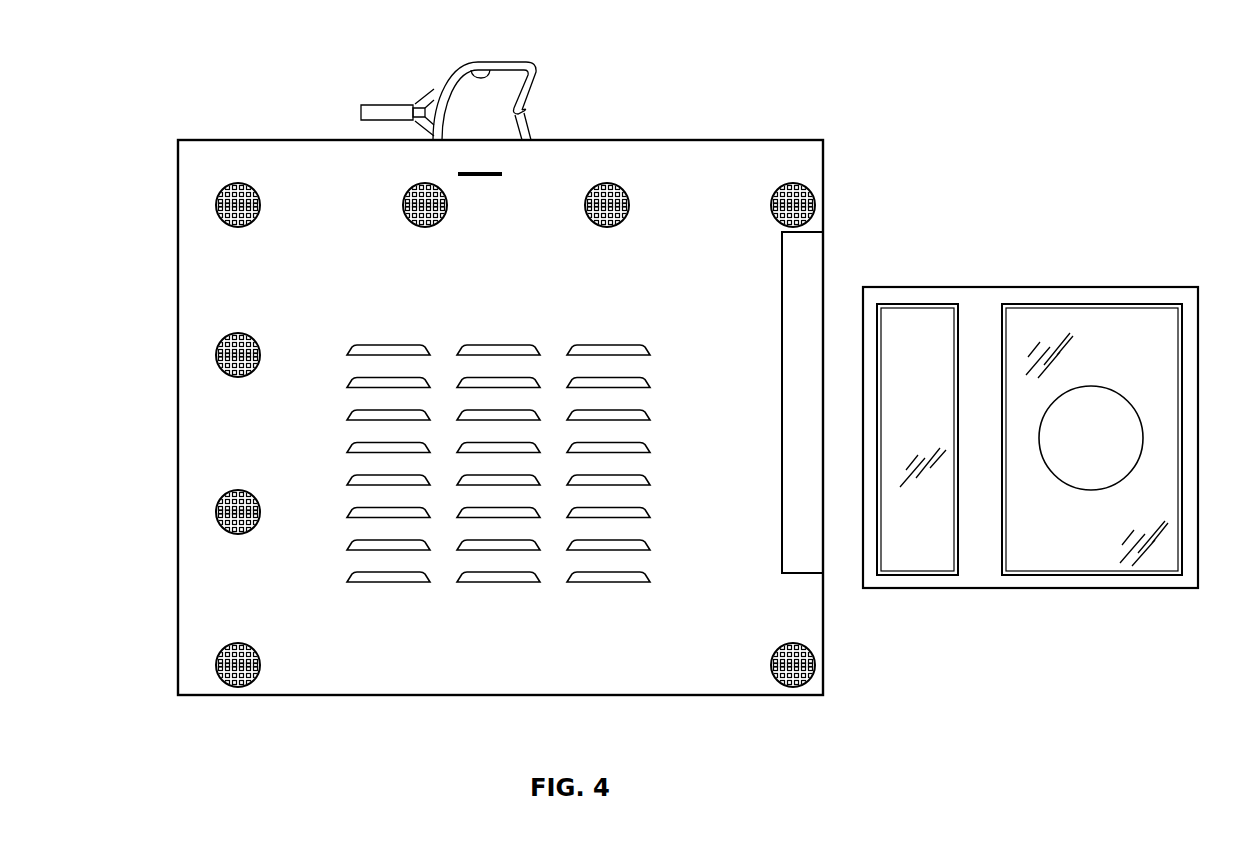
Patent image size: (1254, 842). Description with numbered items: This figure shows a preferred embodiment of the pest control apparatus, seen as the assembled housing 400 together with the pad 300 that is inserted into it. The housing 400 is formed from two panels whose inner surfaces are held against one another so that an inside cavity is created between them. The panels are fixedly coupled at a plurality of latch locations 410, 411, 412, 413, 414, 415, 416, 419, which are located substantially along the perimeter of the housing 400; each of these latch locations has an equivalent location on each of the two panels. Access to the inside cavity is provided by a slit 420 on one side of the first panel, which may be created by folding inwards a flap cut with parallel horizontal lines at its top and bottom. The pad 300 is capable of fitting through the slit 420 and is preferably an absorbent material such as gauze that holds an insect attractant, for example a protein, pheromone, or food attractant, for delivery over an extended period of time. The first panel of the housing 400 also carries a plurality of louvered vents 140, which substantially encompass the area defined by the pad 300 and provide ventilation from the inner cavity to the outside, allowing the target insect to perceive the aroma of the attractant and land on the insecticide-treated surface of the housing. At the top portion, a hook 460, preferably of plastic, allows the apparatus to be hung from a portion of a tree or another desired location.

The housing 400 is at (207, 58).
The hook 460 is at (508, 57).
The latch location 410 is at (215, 665).
The latch location 411 is at (215, 512).
The latch location 412 is at (215, 355).
The latch location 413 is at (215, 205).
The latch location 414 is at (403, 205).
The latch location 415 is at (600, 190).
The latch location 416 is at (815, 205).
The latch location 419 is at (815, 665).
The slit 420 is at (798, 272).
The louvered vents 140 is at (397, 583).
The pad 300 is at (1165, 276).